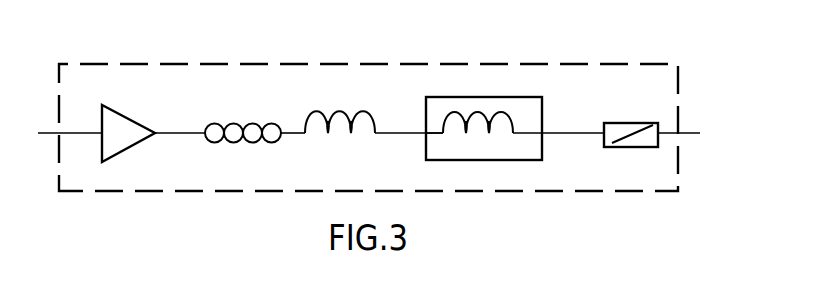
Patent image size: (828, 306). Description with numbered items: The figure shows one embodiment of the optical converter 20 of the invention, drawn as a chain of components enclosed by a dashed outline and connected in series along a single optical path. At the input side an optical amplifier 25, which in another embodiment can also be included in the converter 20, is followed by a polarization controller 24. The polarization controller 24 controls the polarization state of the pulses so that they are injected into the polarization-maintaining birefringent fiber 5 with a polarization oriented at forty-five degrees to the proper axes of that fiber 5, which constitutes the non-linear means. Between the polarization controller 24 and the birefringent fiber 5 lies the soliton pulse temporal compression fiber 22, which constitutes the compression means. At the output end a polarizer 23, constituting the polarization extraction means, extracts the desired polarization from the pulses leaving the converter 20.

The converter 20 is at (82, 62).
The optical amplifier 25 is at (130, 118).
The polarization controller 24 is at (243, 123).
The soliton pulse temporal compression fiber 22 is at (343, 113).
The polarization-maintaining birefringent fiber 5 is at (485, 96).
The polarizer 23 is at (637, 122).